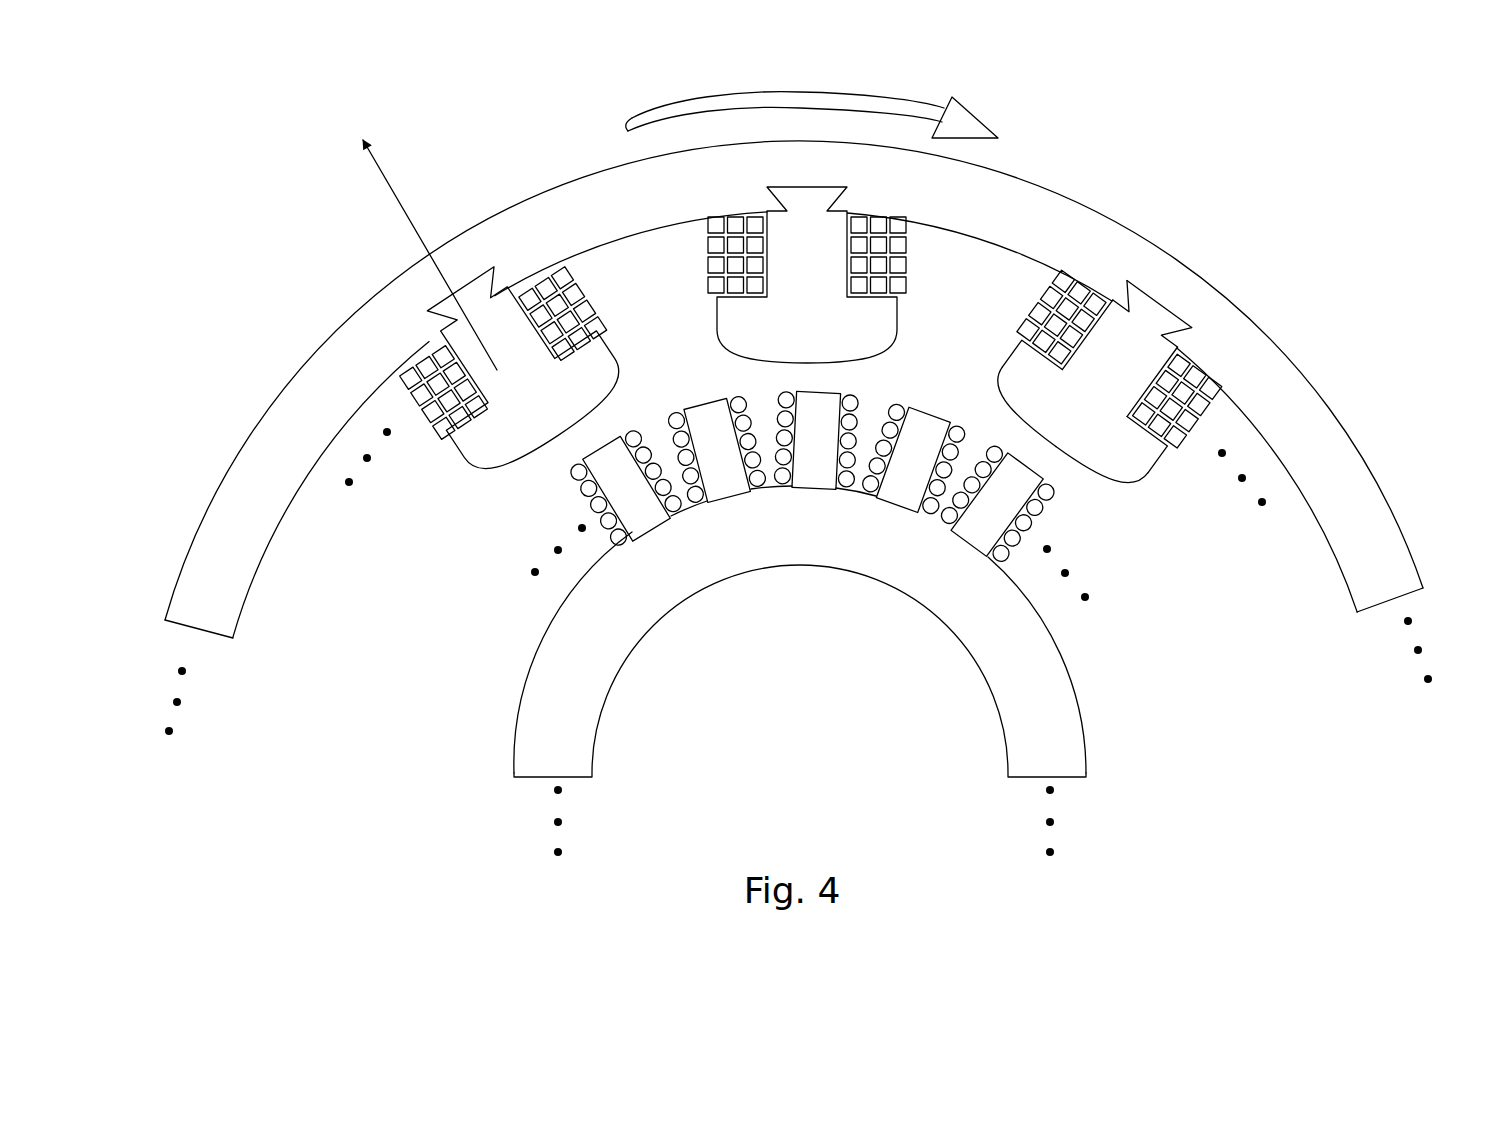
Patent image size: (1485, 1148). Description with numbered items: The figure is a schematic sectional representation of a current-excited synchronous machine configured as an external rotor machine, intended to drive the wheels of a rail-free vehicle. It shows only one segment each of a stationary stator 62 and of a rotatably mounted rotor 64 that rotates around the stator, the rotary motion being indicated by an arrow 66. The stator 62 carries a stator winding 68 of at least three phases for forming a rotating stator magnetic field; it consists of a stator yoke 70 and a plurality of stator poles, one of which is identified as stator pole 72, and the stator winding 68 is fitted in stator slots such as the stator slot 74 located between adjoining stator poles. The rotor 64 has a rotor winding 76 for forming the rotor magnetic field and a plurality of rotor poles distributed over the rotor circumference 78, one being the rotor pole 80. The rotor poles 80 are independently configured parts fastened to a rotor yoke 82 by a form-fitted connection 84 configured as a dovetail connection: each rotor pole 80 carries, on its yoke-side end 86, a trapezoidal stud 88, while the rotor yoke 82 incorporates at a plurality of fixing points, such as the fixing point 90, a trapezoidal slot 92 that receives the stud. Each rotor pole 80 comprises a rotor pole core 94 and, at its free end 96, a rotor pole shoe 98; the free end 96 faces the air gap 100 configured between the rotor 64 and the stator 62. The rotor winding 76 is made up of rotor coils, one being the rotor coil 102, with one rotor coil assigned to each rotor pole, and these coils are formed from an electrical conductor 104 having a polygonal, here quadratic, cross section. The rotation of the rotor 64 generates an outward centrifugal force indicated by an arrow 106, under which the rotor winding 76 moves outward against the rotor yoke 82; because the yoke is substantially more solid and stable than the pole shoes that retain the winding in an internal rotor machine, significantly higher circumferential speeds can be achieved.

The stator 62 is at (853, 623).
The rotor 64 is at (783, 430).
The arrow 66 is at (980, 115).
The stator winding 68 is at (997, 504).
The stator yoke 70 is at (995, 673).
The stator pole 72 is at (626, 488).
The stator slot 74 is at (717, 450).
The rotor winding 76 is at (408, 326).
The rotor circumference 78 is at (294, 594).
The rotor pole 80 is at (1138, 445).
The rotor yoke 82 is at (1317, 450).
The form-fitted connection 84 is at (1158, 370).
The yoke-side end 86 is at (1128, 296).
The trapezoidal stud 88 is at (1159, 304).
The fixing point 90 is at (1152, 382).
The trapezoidal slot 92 is at (1176, 331).
The rotor pole core 94 is at (1087, 335).
The free end 96 is at (1102, 460).
The rotor pole shoe 98 is at (1029, 407).
The air gap 100 is at (1032, 368).
The rotor coil 102 is at (1061, 317).
The electrical conductor 104 is at (1177, 401).
The arrow 106 is at (417, 227).